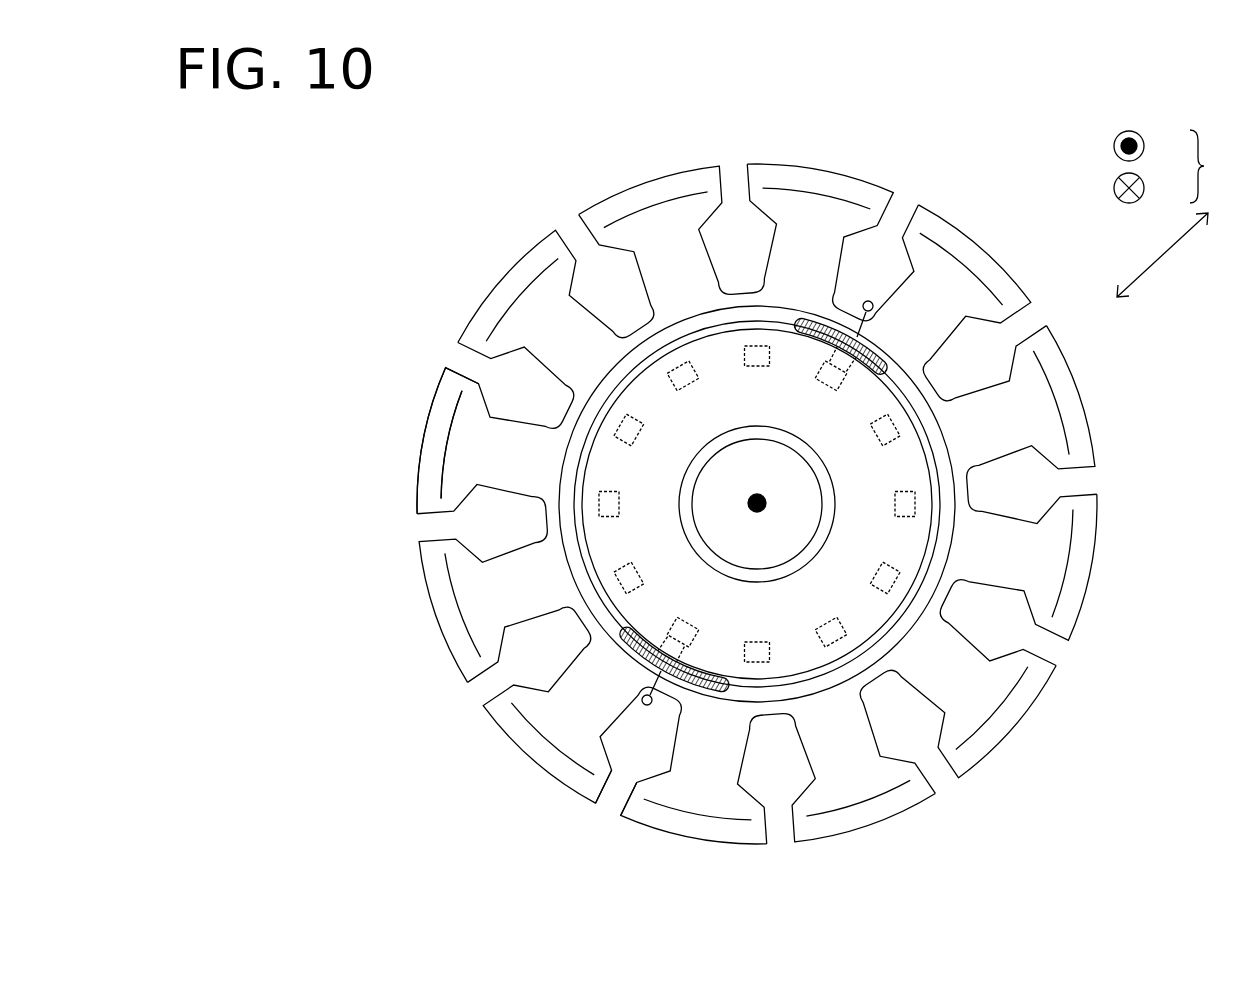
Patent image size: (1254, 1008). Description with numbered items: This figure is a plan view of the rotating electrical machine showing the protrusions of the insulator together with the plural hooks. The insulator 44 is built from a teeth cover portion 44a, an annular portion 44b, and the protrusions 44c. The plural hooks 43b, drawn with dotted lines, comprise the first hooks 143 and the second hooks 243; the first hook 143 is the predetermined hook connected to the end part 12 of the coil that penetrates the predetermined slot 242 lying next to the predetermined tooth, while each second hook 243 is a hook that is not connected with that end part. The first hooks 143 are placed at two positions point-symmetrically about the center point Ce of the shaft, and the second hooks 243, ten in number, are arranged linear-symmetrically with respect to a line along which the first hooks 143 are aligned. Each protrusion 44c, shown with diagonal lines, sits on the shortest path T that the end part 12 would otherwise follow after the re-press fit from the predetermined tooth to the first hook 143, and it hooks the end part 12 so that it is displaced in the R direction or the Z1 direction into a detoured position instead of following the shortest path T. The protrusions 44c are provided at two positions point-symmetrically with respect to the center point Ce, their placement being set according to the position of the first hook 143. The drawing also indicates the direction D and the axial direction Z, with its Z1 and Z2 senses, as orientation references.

The insulator 44 is at (1037, 290).
The teeth cover portion 44a is at (425, 490).
The annular portion 44b is at (563, 527).
The protrusion 44c is at (876, 312).
The predetermined slot 242 is at (612, 798).
The end part 12 is at (822, 318).
The first hook 143 is at (829, 392).
The second hook 243 is at (761, 637).
The hooks 43b is at (820, 610).
The center point Ce is at (763, 497).
The shortest path T is at (818, 366).
The R direction R is at (892, 170).
The direction D is at (1162, 255).
The axial direction Z is at (1208, 166).
The Z1 direction Z1 is at (1146, 146).
The axial direction Z2 is at (1146, 188).